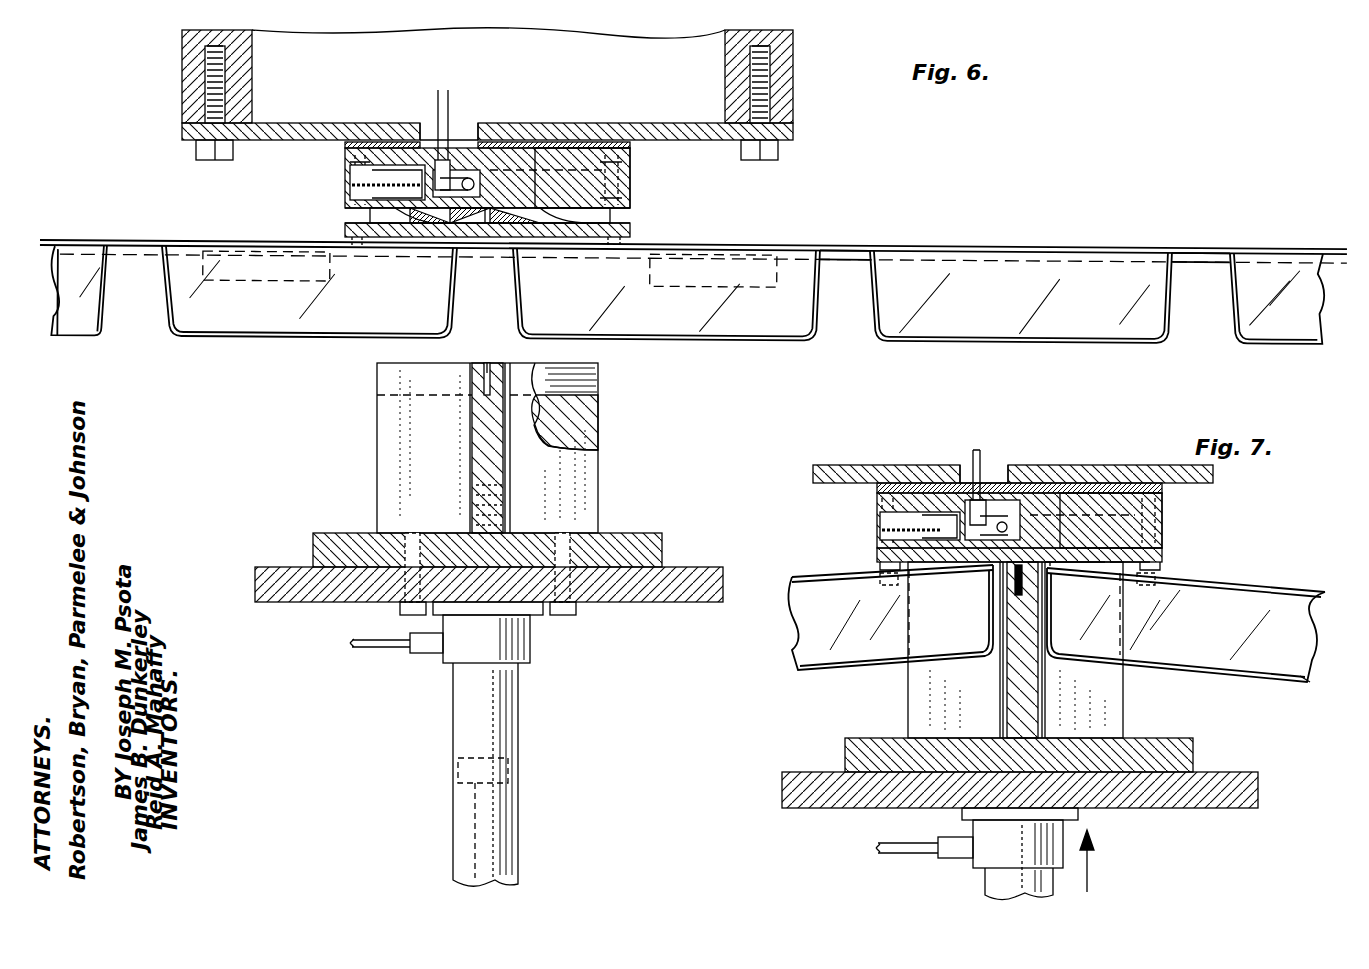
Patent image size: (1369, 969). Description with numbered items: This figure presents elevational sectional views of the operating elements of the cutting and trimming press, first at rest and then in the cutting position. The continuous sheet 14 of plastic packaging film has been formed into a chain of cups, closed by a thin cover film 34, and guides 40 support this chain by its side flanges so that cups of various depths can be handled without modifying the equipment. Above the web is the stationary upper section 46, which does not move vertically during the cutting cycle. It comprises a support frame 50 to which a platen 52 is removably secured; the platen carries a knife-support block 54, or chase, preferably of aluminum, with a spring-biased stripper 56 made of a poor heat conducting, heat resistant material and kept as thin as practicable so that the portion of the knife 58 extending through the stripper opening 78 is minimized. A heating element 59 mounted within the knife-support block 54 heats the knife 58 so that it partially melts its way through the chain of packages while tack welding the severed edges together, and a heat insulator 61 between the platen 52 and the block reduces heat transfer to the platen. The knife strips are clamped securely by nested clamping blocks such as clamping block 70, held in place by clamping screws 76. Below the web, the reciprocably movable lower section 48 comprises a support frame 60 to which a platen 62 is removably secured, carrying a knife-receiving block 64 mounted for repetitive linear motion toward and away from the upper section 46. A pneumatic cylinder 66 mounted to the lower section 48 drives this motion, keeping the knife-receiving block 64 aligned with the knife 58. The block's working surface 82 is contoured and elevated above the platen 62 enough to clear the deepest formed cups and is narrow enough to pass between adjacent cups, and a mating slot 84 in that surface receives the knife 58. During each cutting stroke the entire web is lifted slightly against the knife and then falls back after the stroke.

In FIG. 6, the continuous sheet 14 is at (825, 252).
In FIG. 7, the continuous sheet 14 is at (1290, 683).
In FIG. 6, the cover film 34 is at (848, 242).
In FIG. 7, the cover film 34 is at (1268, 592).
In FIG. 6, the guides 40 is at (1203, 259).
In FIG. 6, the upper section 46 is at (648, 164).
In FIG. 7, the upper section 46 is at (1195, 517).
In FIG. 6, the lower section 48 is at (362, 436).
In FIG. 7, the lower section 48 is at (1140, 704).
In FIG. 6, the support frame 50 is at (182, 80).
In FIG. 6, the platen 52 is at (290, 135).
In FIG. 7, the platen 52 is at (1013, 474).
In FIG. 6, the knife-support block 54 is at (630, 185).
In FIG. 7, the knife-support block 54 is at (877, 505).
In FIG. 6, the stripper 56 is at (632, 232).
In FIG. 7, the stripper 56 is at (1165, 556).
In FIG. 6, the knife 58 is at (540, 232).
In FIG. 7, the knife 58 is at (1045, 560).
In FIG. 6, the heating element 59 is at (455, 178).
In FIG. 7, the heating element 59 is at (995, 512).
In FIG. 6, the support frame 60 is at (293, 597).
In FIG. 7, the support frame 60 is at (822, 805).
In FIG. 6, the heat insulator 61 is at (600, 143).
In FIG. 7, the heat insulator 61 is at (912, 483).
In FIG. 6, the platen 62 is at (650, 532).
In FIG. 7, the platen 62 is at (850, 740).
In FIG. 6, the knife-receiving block 64 is at (600, 460).
In FIG. 7, the knife-receiving block 64 is at (925, 682).
In FIG. 6, the pneumatic cylinder 66 is at (453, 812).
In FIG. 7, the pneumatic cylinder 66 is at (990, 880).
In FIG. 6, the clamping block 70 is at (432, 218).
In FIG. 7, the clamping block 70 is at (985, 565).
In FIG. 6, the clamping screws 76 is at (392, 214).
In FIG. 7, the clamping screws 76 is at (940, 515).
In FIG. 6, the stripper opening 78 is at (472, 232).
In FIG. 7, the stripper opening 78 is at (1070, 565).
In FIG. 6, the working surface 82 is at (480, 360).
In FIG. 7, the working surface 82 is at (1018, 580).
In FIG. 6, the mating slot 84 is at (496, 363).